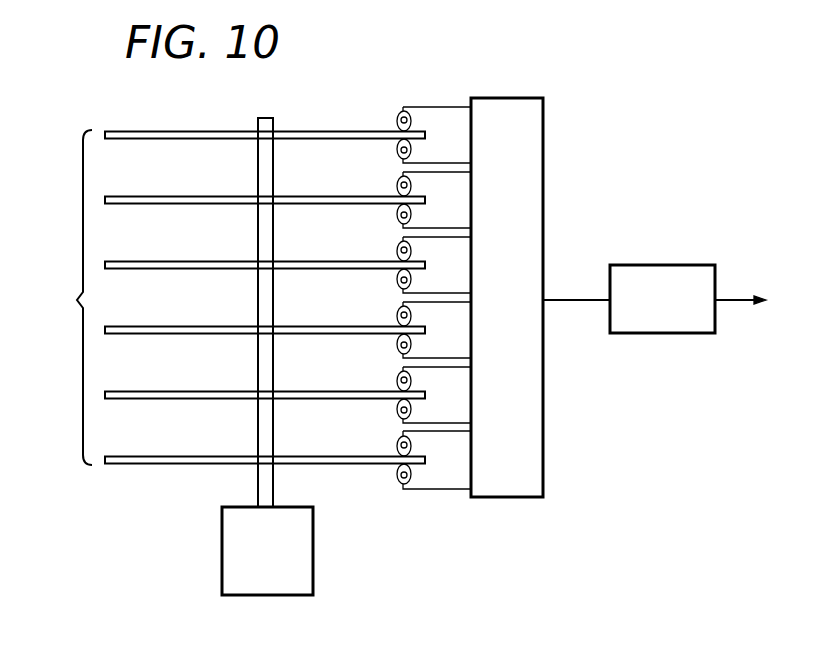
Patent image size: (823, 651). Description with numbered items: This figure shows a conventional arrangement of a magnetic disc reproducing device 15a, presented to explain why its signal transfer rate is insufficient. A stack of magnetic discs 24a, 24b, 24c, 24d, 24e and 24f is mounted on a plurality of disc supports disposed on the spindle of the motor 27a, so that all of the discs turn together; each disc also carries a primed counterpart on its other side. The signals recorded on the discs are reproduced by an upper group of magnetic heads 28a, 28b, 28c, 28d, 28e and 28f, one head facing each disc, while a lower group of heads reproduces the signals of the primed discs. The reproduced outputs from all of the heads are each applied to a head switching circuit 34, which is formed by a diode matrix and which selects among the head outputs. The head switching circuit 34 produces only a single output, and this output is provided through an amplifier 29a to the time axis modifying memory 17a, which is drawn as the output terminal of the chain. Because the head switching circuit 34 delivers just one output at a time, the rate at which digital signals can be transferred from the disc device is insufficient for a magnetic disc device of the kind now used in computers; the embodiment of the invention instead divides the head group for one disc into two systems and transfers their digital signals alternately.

The magnetic disc reproducing device 15a is at (72, 322).
The magnetic disc 24a is at (303, 139).
The magnetic disc 24b is at (303, 204).
The magnetic disc 24c is at (303, 269).
The magnetic disc 24d is at (303, 334).
The magnetic disc 24e is at (303, 399).
The magnetic disc 24f is at (300, 464).
The magnetic head 28a is at (397, 121).
The magnetic head 28b is at (397, 186).
The magnetic head 28c is at (397, 251).
The magnetic head 28d is at (397, 316).
The magnetic head 28e is at (397, 381).
The magnetic head 28f is at (397, 446).
The motor 27a is at (222, 548).
The head switching circuit 34 is at (510, 500).
The amplifier 29a is at (660, 335).
The time axis modifying memory 17a is at (742, 303).